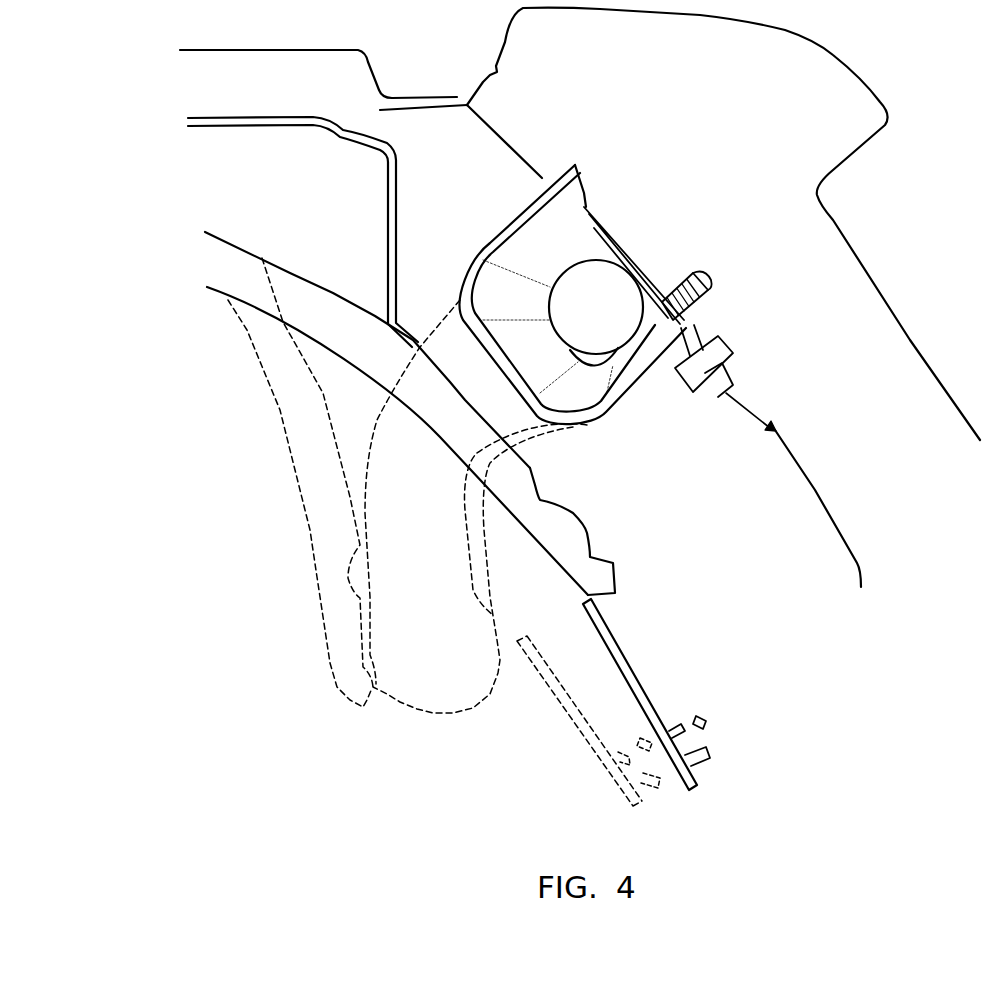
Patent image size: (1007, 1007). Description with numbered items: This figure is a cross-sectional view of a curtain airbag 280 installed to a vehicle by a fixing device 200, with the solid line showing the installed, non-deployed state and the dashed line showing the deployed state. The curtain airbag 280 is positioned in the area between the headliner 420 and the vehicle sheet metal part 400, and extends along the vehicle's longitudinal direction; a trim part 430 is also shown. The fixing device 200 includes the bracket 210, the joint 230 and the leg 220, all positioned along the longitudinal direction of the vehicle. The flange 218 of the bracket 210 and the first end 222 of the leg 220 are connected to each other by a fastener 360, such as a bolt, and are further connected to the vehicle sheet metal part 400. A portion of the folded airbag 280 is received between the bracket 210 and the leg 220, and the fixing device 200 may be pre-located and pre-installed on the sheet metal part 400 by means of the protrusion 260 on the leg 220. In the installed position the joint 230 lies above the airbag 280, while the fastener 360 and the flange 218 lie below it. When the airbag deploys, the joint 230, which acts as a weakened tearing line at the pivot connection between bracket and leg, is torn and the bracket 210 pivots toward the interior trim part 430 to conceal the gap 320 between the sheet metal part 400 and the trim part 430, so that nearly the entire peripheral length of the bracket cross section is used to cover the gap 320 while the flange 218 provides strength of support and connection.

The fixing device 200 is at (548, 222).
The bracket 210 is at (462, 258).
The flange 218 is at (716, 398).
The leg 220 is at (612, 243).
The first end of the leg 222 is at (734, 380).
The joint 230 is at (590, 194).
The protrusion 260 is at (710, 288).
The curtain airbag 280 is at (620, 323).
The gap 320 is at (693, 542).
The fastener 360 is at (722, 340).
The vehicle sheet metal part 400 is at (815, 495).
The headliner 420 is at (312, 305).
The trim part 430 is at (625, 668).